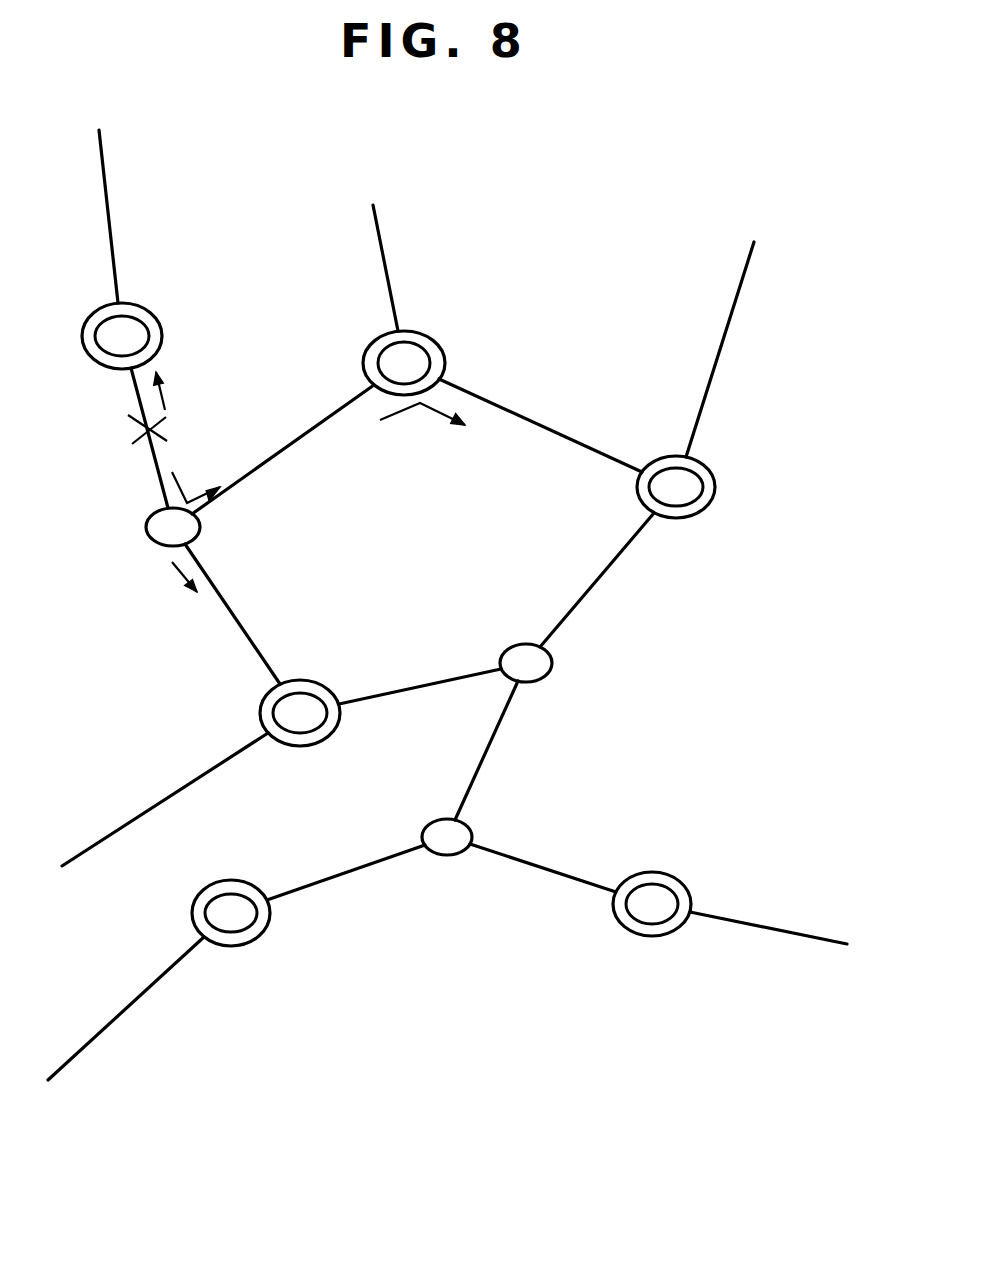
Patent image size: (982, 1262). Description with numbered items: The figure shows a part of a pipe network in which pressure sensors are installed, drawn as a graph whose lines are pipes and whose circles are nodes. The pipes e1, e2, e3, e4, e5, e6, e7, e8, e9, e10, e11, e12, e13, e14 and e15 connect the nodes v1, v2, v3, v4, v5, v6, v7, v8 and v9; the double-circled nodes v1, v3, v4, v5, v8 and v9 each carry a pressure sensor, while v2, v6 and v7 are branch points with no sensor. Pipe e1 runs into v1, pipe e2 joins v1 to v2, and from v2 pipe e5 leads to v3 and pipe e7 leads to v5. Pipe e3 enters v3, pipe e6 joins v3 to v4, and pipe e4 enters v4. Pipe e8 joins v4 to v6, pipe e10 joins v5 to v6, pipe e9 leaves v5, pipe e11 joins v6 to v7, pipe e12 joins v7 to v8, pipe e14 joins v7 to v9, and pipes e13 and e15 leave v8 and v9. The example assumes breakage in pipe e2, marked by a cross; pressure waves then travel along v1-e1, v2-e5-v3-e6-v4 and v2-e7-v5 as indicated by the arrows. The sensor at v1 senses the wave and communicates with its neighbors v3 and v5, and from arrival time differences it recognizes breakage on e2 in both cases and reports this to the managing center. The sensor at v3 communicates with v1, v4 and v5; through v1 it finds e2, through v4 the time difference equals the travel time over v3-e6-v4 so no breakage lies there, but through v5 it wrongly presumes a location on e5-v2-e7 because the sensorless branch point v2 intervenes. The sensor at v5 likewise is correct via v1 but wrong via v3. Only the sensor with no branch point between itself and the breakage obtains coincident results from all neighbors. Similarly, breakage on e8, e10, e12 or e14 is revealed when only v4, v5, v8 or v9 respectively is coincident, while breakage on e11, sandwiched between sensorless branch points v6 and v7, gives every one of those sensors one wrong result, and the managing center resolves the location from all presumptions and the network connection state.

The pipe e1 is at (127, 216).
The pipe e2 is at (173, 438).
The pipe e3 is at (402, 268).
The pipe e4 is at (715, 349).
The pipe e5 is at (283, 449).
The pipe e6 is at (540, 425).
The pipe e7 is at (232, 614).
The pipe e8 is at (597, 580).
The pipe e9 is at (165, 799).
The pipe e10 is at (420, 677).
The pipe e11 is at (474, 750).
The pipe e12 is at (346, 864).
The pipe e13 is at (126, 1008).
The pipe e14 is at (543, 864).
The pipe e15 is at (768, 918).
The node v1 is at (122, 336).
The node v2 is at (173, 527).
The node v3 is at (404, 363).
The node v4 is at (676, 487).
The node v5 is at (300, 713).
The node v6 is at (526, 663).
The node v7 is at (447, 837).
The node v8 is at (231, 913).
The node v9 is at (652, 904).